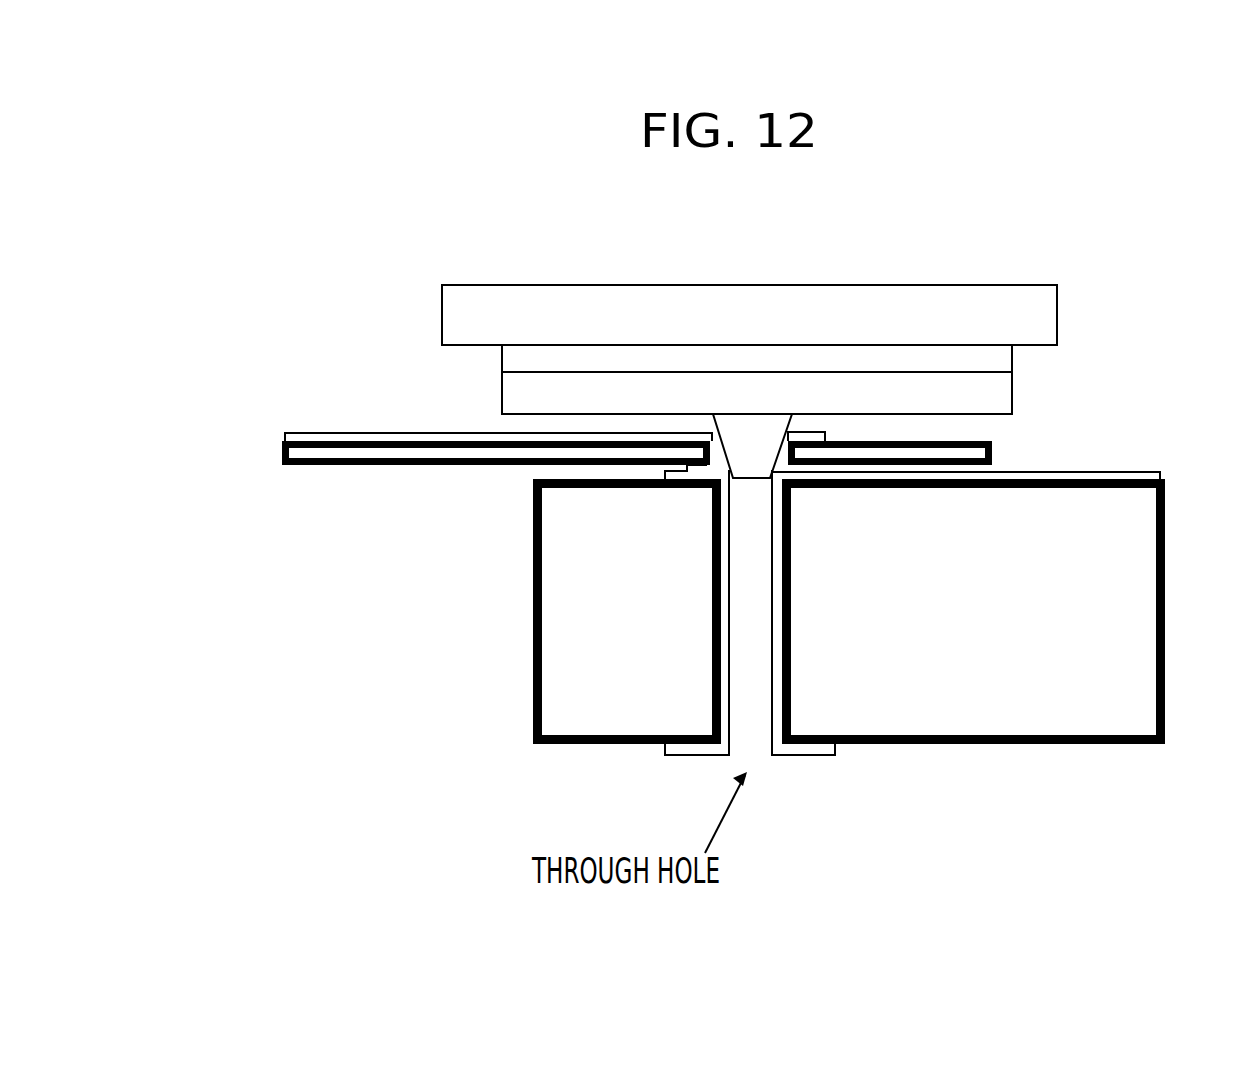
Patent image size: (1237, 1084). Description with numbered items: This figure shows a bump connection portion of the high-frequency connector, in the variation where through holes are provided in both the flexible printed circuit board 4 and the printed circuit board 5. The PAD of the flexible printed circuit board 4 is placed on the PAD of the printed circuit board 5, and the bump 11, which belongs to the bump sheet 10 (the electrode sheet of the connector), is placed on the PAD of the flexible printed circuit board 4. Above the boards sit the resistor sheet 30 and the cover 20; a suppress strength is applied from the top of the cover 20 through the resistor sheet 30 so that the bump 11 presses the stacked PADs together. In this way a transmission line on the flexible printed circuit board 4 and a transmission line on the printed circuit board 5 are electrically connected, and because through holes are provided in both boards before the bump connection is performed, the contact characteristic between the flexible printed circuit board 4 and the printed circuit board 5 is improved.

The bump sheet 10 is at (736, 320).
The cover 20 is at (580, 284).
The resistor sheet 30 is at (1012, 360).
The bump 11 is at (712, 418).
The flexible printed circuit board 4 is at (325, 465).
The printed circuit board 5 is at (533, 727).